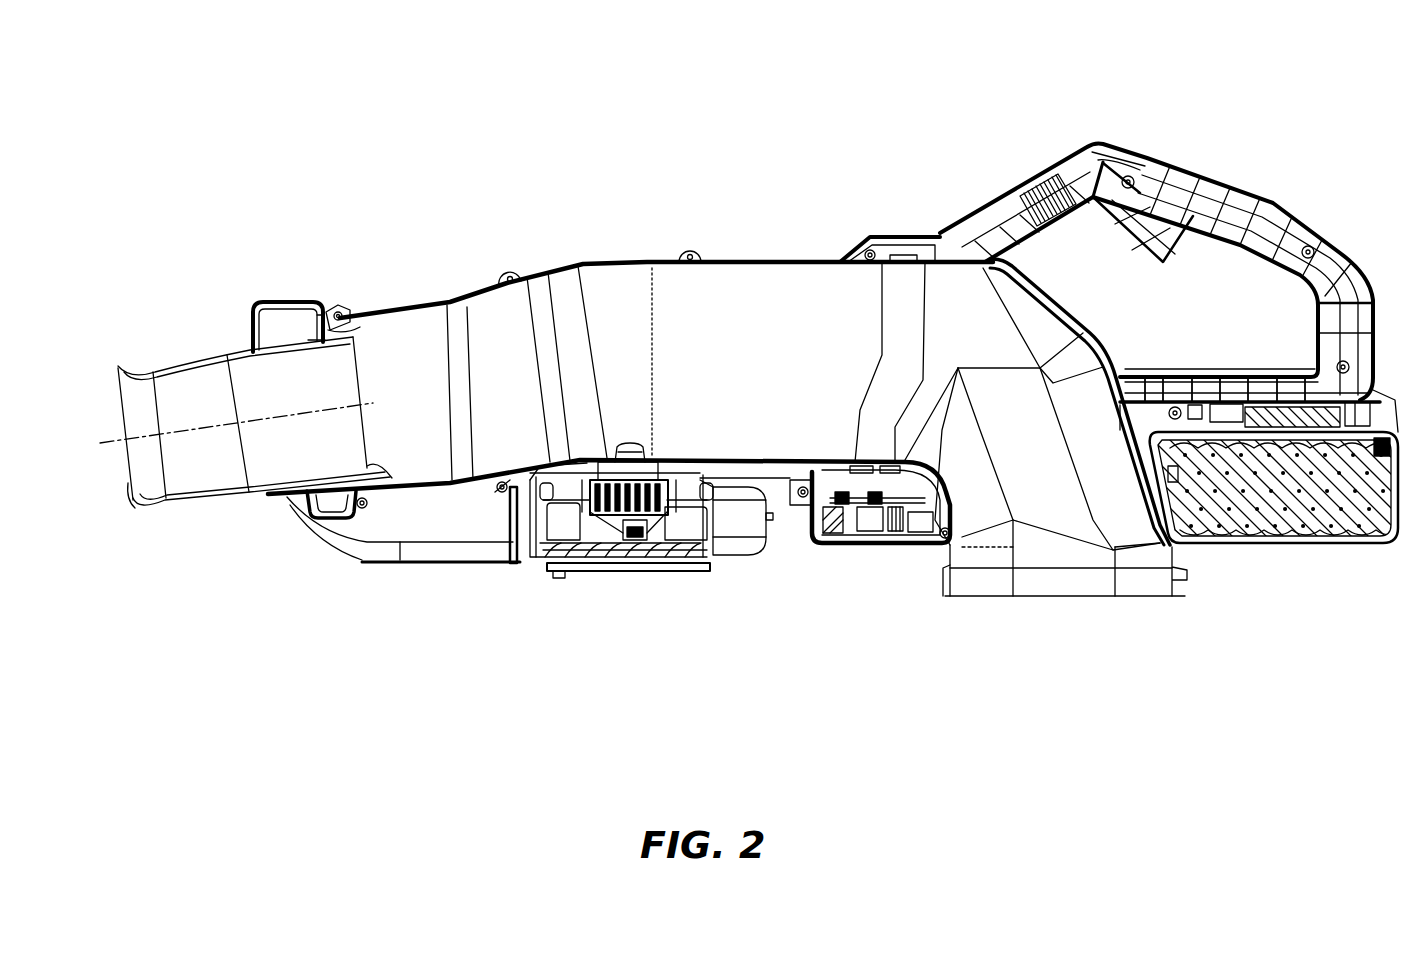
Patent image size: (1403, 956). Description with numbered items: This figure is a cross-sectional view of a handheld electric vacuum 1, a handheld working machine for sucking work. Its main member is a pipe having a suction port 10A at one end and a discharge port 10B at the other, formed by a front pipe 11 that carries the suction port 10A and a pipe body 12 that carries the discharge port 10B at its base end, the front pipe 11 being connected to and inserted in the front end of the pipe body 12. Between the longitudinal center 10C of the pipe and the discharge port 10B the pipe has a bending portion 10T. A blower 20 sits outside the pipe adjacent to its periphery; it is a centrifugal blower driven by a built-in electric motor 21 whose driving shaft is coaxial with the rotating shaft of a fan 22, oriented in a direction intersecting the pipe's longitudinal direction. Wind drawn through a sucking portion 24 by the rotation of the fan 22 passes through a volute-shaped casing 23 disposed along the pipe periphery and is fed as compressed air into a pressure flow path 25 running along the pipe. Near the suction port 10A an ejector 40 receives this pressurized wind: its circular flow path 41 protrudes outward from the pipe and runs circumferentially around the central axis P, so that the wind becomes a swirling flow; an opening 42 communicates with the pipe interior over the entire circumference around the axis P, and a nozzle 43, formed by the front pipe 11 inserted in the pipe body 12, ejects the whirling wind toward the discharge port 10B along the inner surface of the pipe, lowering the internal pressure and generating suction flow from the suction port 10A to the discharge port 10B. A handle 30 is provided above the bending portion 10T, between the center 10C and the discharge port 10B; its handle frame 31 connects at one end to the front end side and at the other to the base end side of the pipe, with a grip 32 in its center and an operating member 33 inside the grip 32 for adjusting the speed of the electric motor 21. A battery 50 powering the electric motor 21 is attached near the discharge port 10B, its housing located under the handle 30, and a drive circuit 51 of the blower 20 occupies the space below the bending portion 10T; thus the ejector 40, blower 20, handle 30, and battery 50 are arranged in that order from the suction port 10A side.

The handheld electric vacuum 1 is at (1277, 63).
The suction port 10A is at (131, 497).
The discharge port 10B is at (1047, 597).
The center of the pipe 10C is at (655, 262).
The bending portion 10T is at (1068, 296).
The front pipe 11 is at (192, 357).
The pipe body 12 is at (765, 262).
The blower 20 is at (633, 556).
The electric motor 21 is at (510, 530).
The fan 22 is at (533, 557).
The casing 23 is at (688, 583).
The sucking portion 24 is at (627, 573).
The pressure flow path 25 is at (347, 552).
The handle 30 is at (1119, 267).
The handle frame 31 is at (973, 216).
The grip 32 is at (1195, 168).
The operating member 33 is at (1170, 256).
The ejector 40 is at (289, 281).
The circular flow path 41 is at (285, 313).
The opening 42 is at (310, 330).
The nozzle 43 is at (347, 318).
The battery 50 is at (1313, 545).
The drive circuit 51 is at (857, 547).
The central axis P is at (103, 442).